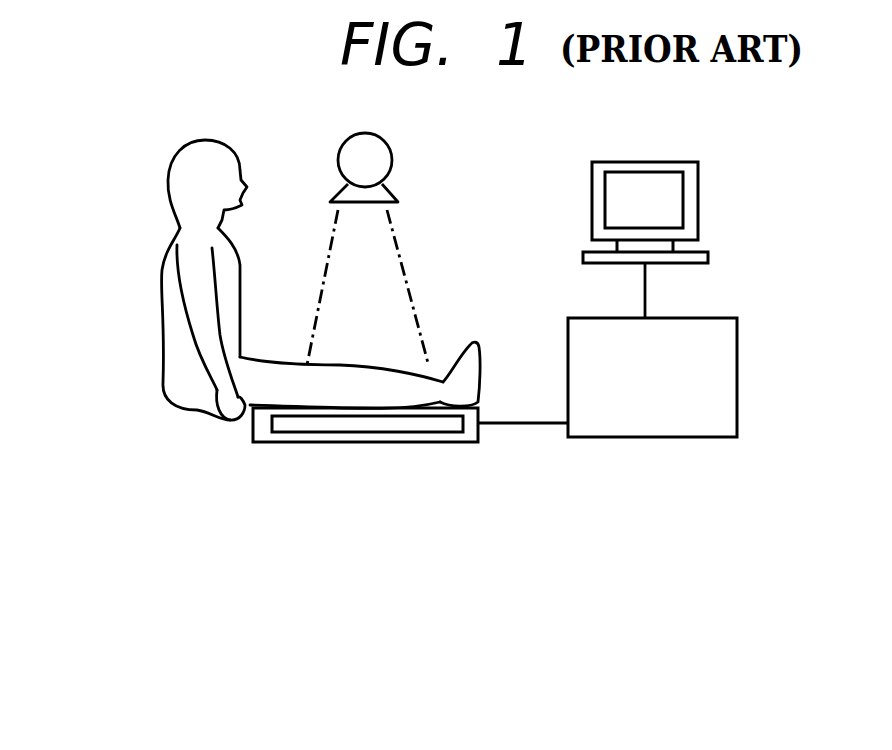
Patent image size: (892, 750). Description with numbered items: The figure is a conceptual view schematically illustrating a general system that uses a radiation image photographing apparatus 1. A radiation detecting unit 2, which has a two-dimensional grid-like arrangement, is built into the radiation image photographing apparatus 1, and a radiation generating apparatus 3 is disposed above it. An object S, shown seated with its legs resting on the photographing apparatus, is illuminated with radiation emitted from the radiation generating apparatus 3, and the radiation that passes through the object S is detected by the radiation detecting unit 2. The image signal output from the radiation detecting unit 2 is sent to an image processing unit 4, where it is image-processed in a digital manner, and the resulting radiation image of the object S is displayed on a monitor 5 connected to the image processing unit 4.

The object S is at (173, 228).
The radiation image photographing apparatus 1 is at (285, 443).
The radiation detecting unit 2 is at (422, 425).
The radiation generating apparatus 3 is at (372, 162).
The image processing unit 4 is at (652, 403).
The monitor 5 is at (657, 202).